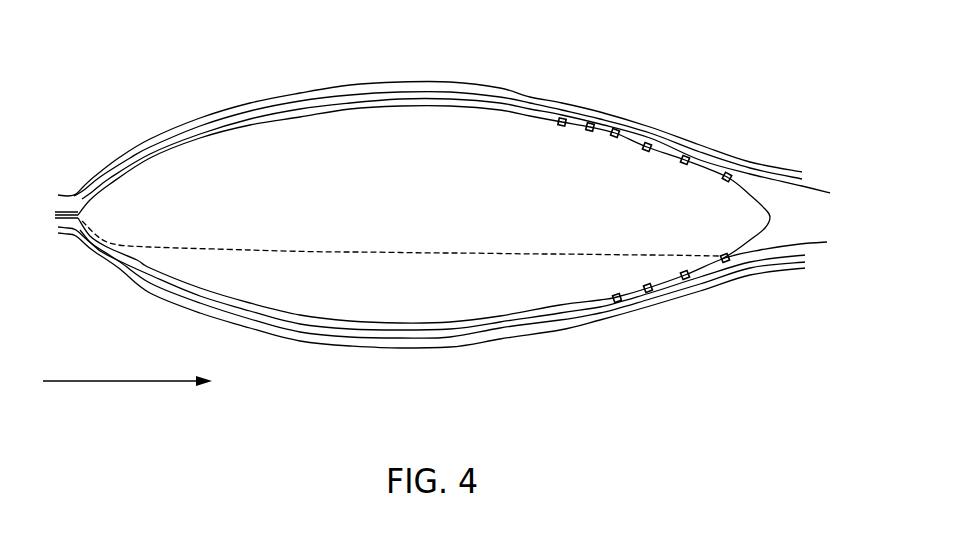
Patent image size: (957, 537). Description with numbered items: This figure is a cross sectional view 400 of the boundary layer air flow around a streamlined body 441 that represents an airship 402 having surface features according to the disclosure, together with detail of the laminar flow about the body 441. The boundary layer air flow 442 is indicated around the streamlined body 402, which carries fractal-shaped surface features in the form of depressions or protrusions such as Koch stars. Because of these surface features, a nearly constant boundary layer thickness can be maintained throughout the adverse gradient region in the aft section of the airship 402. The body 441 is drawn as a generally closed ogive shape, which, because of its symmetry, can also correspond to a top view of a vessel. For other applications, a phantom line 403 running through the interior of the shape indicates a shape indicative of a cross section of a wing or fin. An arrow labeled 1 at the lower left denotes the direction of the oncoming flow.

The cross sectional view 400 is at (151, 70).
The streamlined body 441 is at (355, 107).
The boundary layer air flow 442 is at (390, 323).
The airship 402 is at (413, 203).
The phantom line 403 is at (450, 250).
The flow direction 1 is at (127, 369).